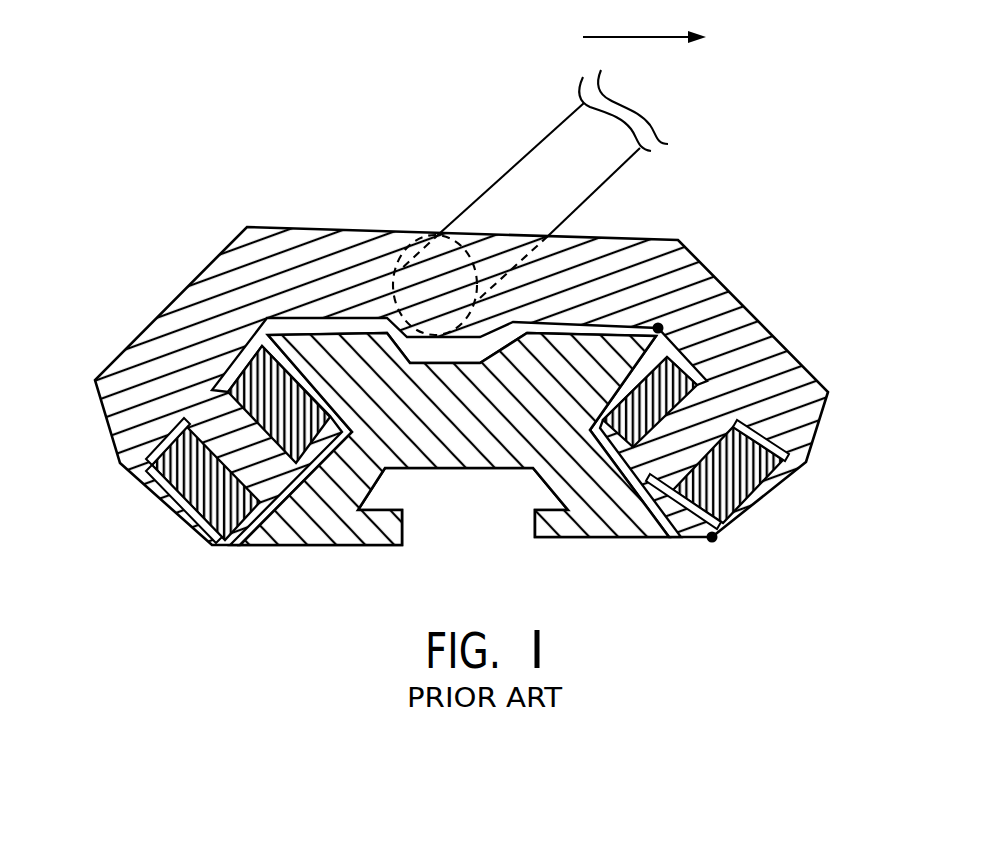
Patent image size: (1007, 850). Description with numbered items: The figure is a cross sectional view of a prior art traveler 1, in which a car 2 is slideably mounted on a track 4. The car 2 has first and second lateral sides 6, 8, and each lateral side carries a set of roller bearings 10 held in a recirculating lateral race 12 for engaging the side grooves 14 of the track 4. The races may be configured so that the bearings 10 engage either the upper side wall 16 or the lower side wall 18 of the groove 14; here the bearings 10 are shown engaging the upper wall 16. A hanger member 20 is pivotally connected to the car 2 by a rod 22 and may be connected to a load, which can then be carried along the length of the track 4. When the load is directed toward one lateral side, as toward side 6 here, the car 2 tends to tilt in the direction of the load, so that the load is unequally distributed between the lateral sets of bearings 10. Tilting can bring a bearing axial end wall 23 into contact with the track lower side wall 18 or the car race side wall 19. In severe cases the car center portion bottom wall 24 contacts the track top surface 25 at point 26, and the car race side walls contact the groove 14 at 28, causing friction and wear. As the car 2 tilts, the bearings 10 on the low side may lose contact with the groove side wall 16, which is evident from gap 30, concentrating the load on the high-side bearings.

The traveler 1 is at (255, 185).
The car 2 is at (703, 258).
The track 4 is at (423, 470).
The first lateral side 6 is at (777, 334).
The second lateral side 8 is at (158, 313).
The roller bearings 10 is at (223, 540).
The lateral race 12 is at (150, 432).
The side grooves 14 is at (343, 480).
The upper side wall 16 is at (432, 469).
The lower side wall 18 is at (267, 546).
The car race side wall 19 is at (760, 420).
The hanger member 20 is at (540, 170).
The rod 22 is at (441, 232).
The bearing axial end wall 23 is at (684, 527).
The car center portion bottom wall 24 is at (522, 311).
The track top surface 25 is at (462, 314).
The point 26 is at (660, 324).
The contact location 28 is at (713, 542).
The gap 30 is at (683, 380).